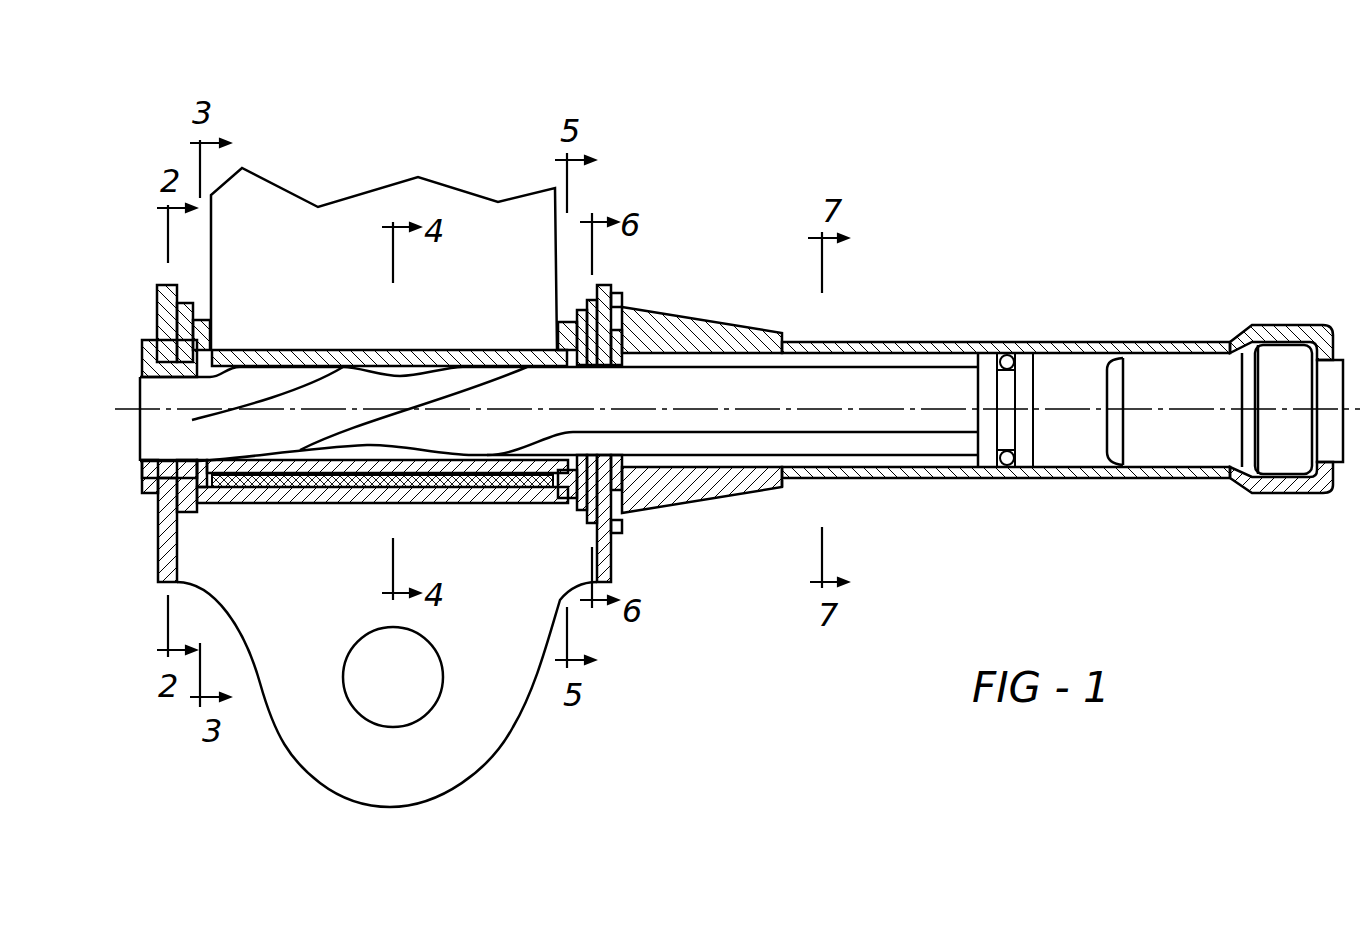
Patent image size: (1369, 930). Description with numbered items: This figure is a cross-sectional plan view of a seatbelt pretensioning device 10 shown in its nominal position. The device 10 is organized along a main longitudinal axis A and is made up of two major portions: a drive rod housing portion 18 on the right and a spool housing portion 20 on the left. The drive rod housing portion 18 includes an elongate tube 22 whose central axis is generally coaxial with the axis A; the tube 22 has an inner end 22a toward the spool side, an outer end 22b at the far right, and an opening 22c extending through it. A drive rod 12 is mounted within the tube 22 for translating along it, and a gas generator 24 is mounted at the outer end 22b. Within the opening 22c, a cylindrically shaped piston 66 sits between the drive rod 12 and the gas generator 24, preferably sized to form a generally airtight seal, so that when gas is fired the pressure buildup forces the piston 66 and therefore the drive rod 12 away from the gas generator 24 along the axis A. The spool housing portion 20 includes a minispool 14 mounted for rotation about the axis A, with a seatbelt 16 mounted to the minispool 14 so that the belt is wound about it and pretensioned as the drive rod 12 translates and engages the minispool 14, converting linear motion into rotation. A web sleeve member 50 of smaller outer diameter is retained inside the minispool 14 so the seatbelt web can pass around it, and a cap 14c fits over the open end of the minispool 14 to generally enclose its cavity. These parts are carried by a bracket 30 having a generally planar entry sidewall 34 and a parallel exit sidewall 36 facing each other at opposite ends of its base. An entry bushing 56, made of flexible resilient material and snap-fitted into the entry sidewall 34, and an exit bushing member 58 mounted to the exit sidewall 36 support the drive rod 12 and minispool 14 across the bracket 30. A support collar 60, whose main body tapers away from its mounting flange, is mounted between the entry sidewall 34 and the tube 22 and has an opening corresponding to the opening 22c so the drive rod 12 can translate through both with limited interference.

The seatbelt pretensioning device 10 is at (953, 158).
The drive rod 12 is at (880, 390).
The minispool 14 is at (277, 493).
The cap 14c is at (586, 509).
The seatbelt 16 is at (280, 223).
The drive rod housing portion 18 is at (933, 265).
The spool housing portion 20 is at (497, 126).
The elongate tube 22 is at (1048, 347).
The inner end 22a is at (803, 480).
The outer end 22b is at (1283, 497).
The opening 22c is at (1098, 395).
The gas generator 24 is at (1178, 373).
The bracket 30 is at (323, 762).
The entry sidewall 34 is at (610, 552).
The exit sidewall 36 is at (160, 547).
The web sleeve member 50 is at (470, 472).
The entry bushing 56 is at (600, 322).
The exit bushing member 58 is at (145, 482).
The support collar 60 is at (680, 330).
The piston 66 is at (1007, 427).
The main longitudinal axis A is at (1352, 410).